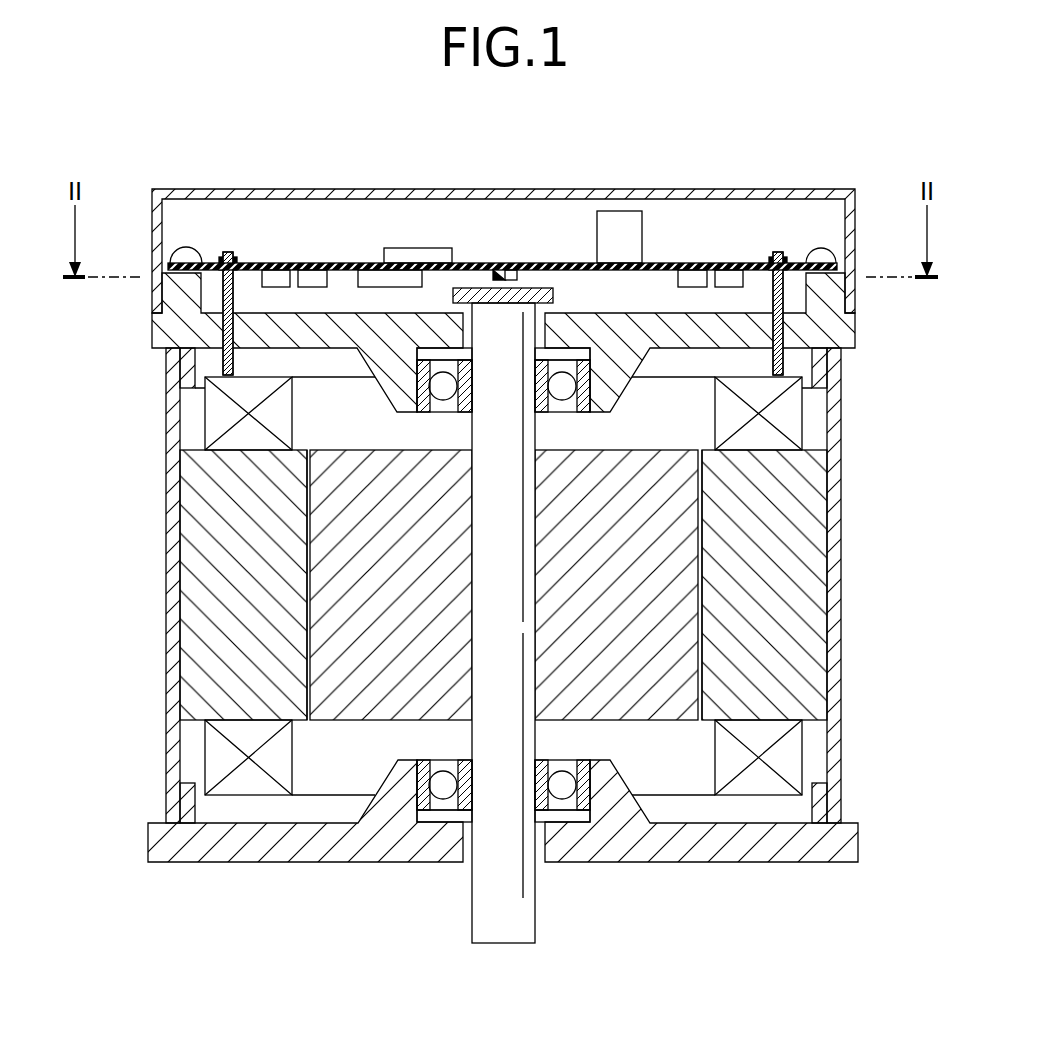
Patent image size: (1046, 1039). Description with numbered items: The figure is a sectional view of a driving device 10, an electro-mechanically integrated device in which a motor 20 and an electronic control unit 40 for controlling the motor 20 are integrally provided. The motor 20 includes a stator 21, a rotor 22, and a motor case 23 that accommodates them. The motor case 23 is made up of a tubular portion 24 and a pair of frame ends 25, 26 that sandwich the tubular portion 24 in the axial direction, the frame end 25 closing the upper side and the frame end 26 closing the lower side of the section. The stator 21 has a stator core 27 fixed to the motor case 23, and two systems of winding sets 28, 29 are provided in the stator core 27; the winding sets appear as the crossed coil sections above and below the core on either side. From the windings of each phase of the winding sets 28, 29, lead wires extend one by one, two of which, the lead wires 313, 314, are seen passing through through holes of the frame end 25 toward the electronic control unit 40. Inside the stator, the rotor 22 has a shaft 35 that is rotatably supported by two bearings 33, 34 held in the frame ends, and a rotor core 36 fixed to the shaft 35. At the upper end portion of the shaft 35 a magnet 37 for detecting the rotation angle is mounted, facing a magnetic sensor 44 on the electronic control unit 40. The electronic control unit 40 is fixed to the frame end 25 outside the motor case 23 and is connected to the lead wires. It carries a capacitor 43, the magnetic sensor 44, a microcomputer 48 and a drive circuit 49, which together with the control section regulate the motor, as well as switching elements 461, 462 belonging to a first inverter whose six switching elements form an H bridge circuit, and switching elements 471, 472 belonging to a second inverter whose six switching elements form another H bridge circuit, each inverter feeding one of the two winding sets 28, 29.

The driving device 10 is at (172, 160).
The motor 20 is at (489, 585).
The stator 21 is at (830, 663).
The rotor 22 is at (504, 684).
The motor case 23 is at (160, 706).
The tubular portion 24 is at (176, 541).
The frame end 25 is at (155, 330).
The frame end 26 is at (158, 843).
The stator core 27 is at (800, 550).
The winding set 28 is at (215, 415).
The winding set 29 is at (783, 758).
The bearing 33 is at (443, 392).
The bearing 34 is at (443, 792).
The shaft 35 is at (515, 905).
The rotor core 36 is at (597, 700).
The magnet 37 is at (453, 297).
The electronic control unit 40 is at (351, 240).
The capacitor 43 is at (616, 210).
The magnetic sensor 44 is at (501, 268).
The microcomputer 48 is at (431, 247).
The drive circuit 49 is at (391, 278).
The lead wire 313 is at (227, 250).
The lead wire 314 is at (779, 251).
The switching element 461 is at (273, 277).
The switching element 462 is at (313, 277).
The switching element 471 is at (690, 277).
The switching element 472 is at (731, 277).